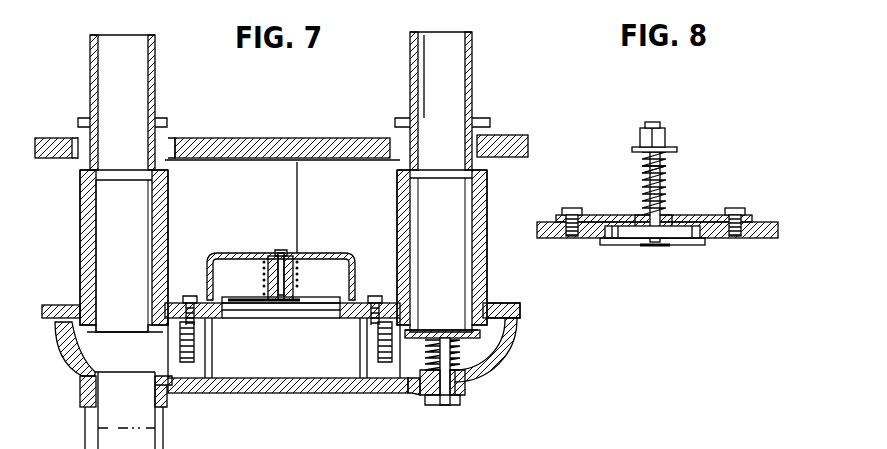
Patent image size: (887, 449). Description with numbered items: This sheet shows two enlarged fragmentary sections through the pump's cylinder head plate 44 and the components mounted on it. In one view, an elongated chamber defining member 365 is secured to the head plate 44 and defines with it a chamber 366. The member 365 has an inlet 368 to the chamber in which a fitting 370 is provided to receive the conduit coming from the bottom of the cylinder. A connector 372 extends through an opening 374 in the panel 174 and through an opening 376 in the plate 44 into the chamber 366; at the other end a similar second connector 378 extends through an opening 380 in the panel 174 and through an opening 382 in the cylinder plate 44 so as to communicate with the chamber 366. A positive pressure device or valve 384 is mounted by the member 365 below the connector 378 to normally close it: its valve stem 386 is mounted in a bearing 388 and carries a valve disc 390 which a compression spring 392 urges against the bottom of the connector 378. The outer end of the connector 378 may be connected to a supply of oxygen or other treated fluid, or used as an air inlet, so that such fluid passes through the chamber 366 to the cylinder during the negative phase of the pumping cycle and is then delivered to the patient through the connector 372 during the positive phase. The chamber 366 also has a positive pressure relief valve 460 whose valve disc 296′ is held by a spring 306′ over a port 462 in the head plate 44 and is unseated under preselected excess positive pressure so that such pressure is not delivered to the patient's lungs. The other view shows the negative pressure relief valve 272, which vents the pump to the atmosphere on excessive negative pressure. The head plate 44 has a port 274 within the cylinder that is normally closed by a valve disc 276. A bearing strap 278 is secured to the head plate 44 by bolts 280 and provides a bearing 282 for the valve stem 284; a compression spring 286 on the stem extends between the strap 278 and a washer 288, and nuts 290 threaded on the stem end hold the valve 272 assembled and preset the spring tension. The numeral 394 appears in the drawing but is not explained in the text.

In FIG. 7, the cylinder head plate 44 is at (505, 310).
In FIG. 8, the cylinder head plate 44 is at (770, 232).
In FIG. 7, the panel 174 is at (275, 137).
In FIG. 8, the negative pressure relief valve 272 is at (688, 190).
In FIG. 8, the port 274 is at (706, 222).
In FIG. 8, the valve disc 276 is at (694, 246).
In FIG. 8, the bearing strap 278 is at (612, 220).
In FIG. 8, the bolts 280 is at (572, 214).
In FIG. 8, the bearing 282 is at (672, 218).
In FIG. 8, the valve stem 284 is at (646, 178).
In FIG. 8, the compression spring 286 is at (646, 159).
In FIG. 8, the washer 288 is at (670, 149).
In FIG. 8, the nuts 290 is at (660, 136).
In FIG. 7, the valve disc 296′ is at (318, 297).
In FIG. 7, the spring 306′ is at (263, 264).
In FIG. 7, the chamber defining member 365 is at (517, 352).
In FIG. 7, the chamber 366 is at (268, 349).
In FIG. 7, the inlet 368 is at (108, 364).
In FIG. 7, the fitting 370 is at (86, 409).
In FIG. 7, the connector 372 is at (164, 94).
In FIG. 7, the opening 374 is at (175, 140).
In FIG. 7, the opening 376 is at (66, 311).
In FIG. 7, the second connector 378 is at (406, 101).
In FIG. 7, the opening 380 is at (490, 142).
In FIG. 7, the opening 382 is at (488, 305).
In FIG. 7, the positive pressure device or valve 384 is at (471, 363).
In FIG. 7, the valve stem 386 is at (452, 397).
In FIG. 7, the bearing 388 is at (428, 405).
In FIG. 7, the valve disc 390 is at (482, 334).
In FIG. 7, the compression spring 392 is at (426, 365).
In FIG. 7, the tube wall 394 is at (91, 67).
In FIG. 7, the positive pressure relief valve 460 is at (264, 246).
In FIG. 7, the port 462 is at (332, 308).